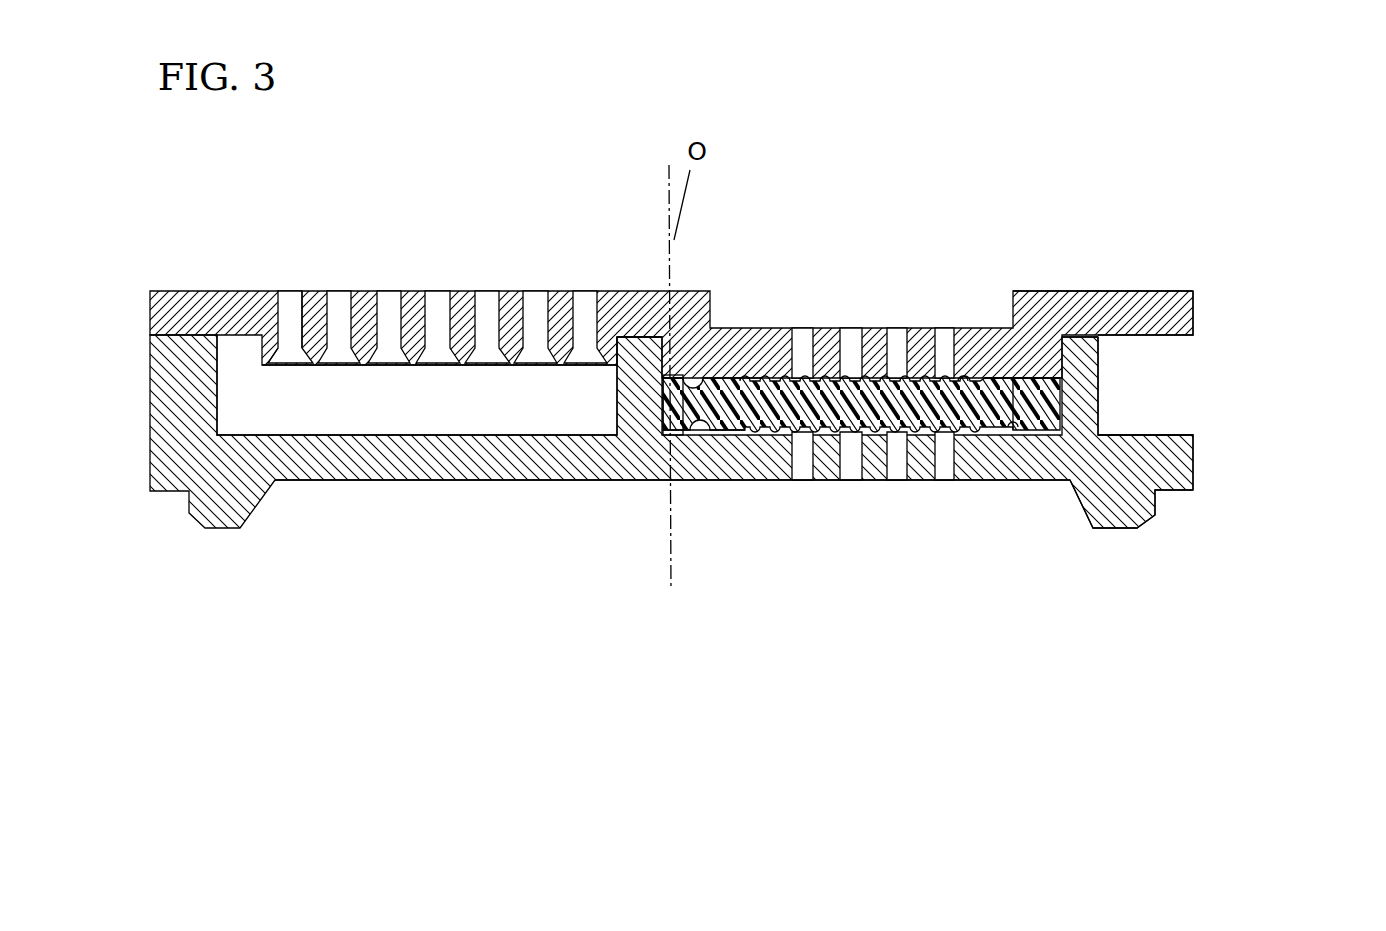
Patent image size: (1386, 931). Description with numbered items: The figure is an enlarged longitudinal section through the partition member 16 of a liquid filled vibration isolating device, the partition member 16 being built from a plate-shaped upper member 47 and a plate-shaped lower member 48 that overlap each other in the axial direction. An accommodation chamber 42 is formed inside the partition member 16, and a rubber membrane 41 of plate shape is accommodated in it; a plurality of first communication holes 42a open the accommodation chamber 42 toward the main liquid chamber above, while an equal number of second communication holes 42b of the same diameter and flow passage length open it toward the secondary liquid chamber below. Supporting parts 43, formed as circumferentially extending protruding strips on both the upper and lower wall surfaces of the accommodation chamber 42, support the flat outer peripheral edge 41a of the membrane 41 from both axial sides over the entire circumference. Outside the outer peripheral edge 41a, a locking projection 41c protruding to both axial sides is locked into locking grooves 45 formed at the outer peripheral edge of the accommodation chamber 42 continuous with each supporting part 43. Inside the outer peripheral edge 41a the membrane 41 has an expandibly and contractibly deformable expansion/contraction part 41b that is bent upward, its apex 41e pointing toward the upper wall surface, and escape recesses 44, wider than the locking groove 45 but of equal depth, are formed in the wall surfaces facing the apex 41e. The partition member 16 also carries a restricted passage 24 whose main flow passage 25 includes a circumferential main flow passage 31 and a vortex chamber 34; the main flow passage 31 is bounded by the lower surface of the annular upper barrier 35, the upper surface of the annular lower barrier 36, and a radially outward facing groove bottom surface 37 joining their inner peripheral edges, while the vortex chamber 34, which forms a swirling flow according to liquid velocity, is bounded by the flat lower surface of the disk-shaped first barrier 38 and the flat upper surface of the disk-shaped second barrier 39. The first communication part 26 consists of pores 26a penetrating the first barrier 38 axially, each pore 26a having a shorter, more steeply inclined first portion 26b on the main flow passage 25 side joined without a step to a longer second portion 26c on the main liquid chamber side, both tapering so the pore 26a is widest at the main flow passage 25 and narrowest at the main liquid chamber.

The partition member 16 is at (1186, 290).
The restricted passage 24 is at (757, 431).
The main flow passage 25 is at (757, 431).
The first communication part 26 is at (407, 267).
The pore 26a is at (323, 216).
The first portion 26b is at (284, 353).
The second portion 26c is at (283, 306).
The main flow passage 31 is at (1158, 376).
The vortex chamber 34 is at (246, 398).
The upper barrier 35 is at (1143, 290).
The lower barrier 36 is at (1168, 498).
The groove bottom surface 37 is at (1100, 401).
The first barrier 38 is at (407, 267).
The second barrier 39 is at (441, 481).
The membrane 41 is at (922, 432).
The outer peripheral edge 41a is at (1027, 392).
The expansion/contraction part 41b is at (724, 437).
The locking projection 41c is at (1054, 377).
The apex 41e is at (750, 340).
The accommodation chamber 42 is at (888, 424).
The first communication hole 42a is at (851, 345).
The second communication hole 42b is at (850, 463).
The supporting part 43 is at (705, 378).
The escape recess 44 is at (963, 378).
The locking groove 45 is at (640, 345).
The upper member 47 is at (1200, 310).
The lower member 48 is at (1200, 465).